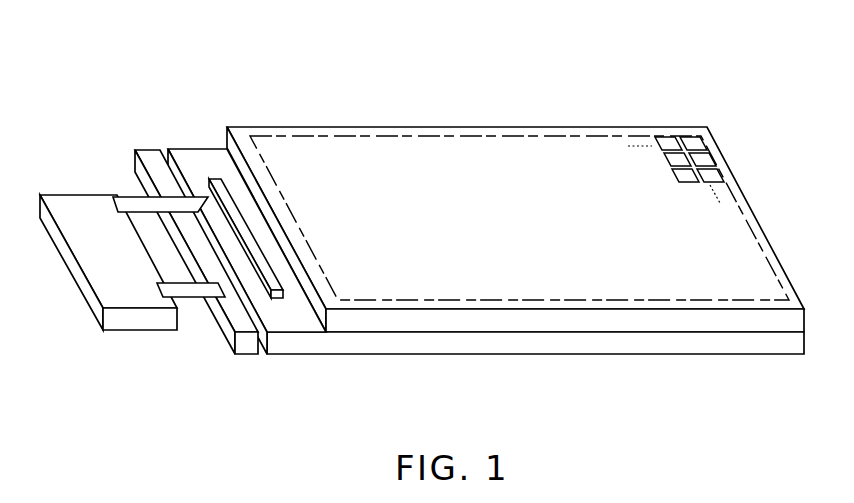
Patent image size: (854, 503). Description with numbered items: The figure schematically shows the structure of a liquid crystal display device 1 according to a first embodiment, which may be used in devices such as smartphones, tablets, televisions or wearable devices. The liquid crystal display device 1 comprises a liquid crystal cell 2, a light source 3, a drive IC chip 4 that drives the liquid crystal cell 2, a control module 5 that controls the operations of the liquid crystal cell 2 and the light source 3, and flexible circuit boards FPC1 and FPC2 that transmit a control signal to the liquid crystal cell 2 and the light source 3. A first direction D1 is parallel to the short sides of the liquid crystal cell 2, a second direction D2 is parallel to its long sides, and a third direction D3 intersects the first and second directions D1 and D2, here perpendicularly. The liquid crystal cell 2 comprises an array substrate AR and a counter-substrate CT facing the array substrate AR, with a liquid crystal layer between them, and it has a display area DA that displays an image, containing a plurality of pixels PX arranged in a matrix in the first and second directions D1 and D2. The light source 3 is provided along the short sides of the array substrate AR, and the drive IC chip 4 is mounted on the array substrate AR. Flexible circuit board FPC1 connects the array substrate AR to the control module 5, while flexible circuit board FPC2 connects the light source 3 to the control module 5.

The liquid crystal display device 1 is at (680, 94).
The liquid crystal cell 2 is at (486, 259).
The light source 3 is at (247, 343).
The drive IC chip 4 is at (218, 178).
The control module 5 is at (127, 323).
The array substrate AR is at (652, 403).
The counter-substrate CT is at (515, 242).
The display area DA is at (453, 135).
The pixels PX is at (693, 145).
The flexible circuit board FPC1 is at (138, 203).
The flexible circuit board FPC2 is at (192, 293).
The first direction D1 is at (49, 89).
The second direction D2 is at (49, 89).
The third direction D3 is at (49, 89).